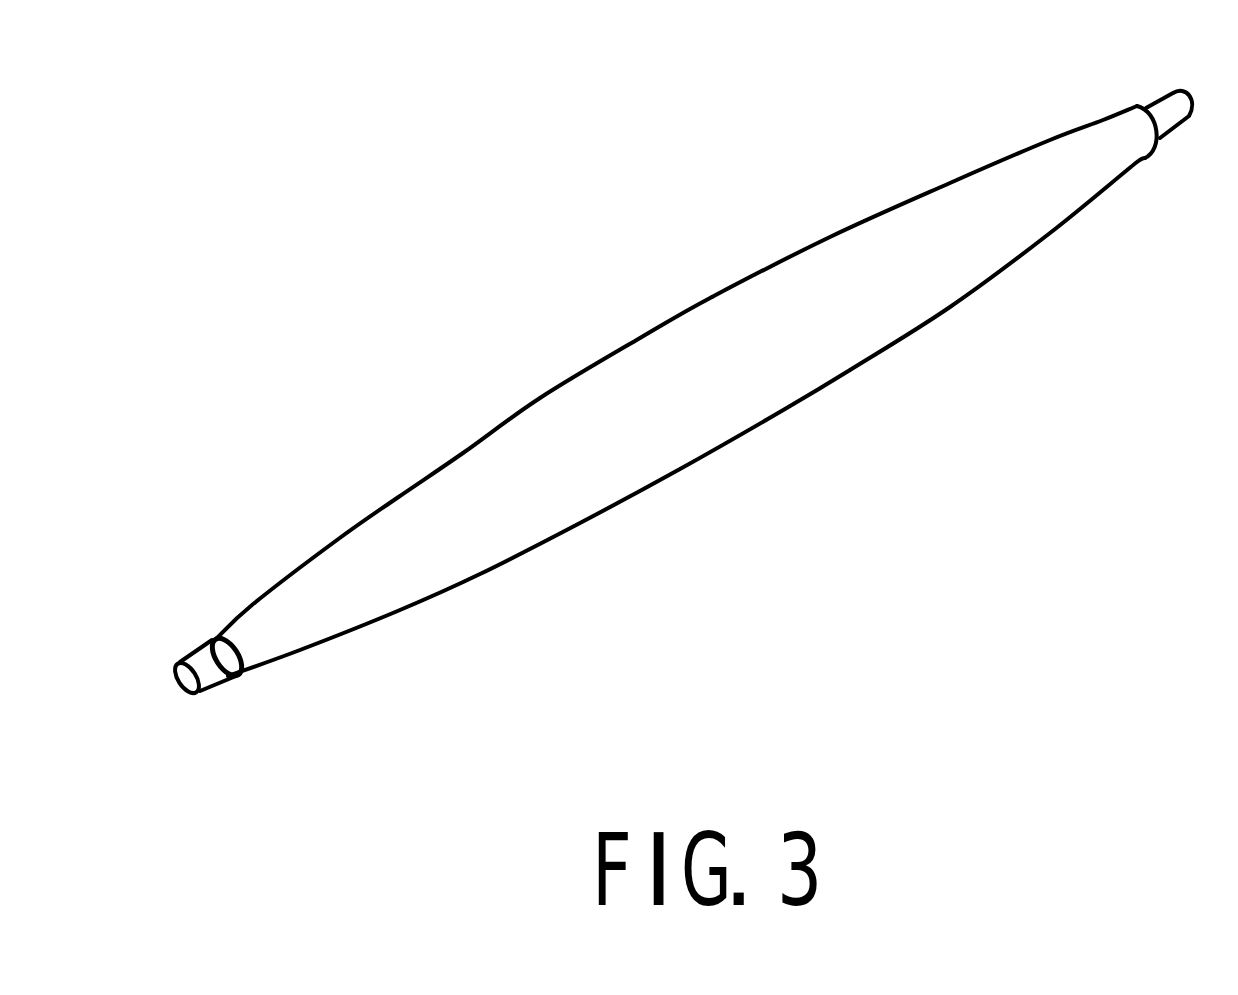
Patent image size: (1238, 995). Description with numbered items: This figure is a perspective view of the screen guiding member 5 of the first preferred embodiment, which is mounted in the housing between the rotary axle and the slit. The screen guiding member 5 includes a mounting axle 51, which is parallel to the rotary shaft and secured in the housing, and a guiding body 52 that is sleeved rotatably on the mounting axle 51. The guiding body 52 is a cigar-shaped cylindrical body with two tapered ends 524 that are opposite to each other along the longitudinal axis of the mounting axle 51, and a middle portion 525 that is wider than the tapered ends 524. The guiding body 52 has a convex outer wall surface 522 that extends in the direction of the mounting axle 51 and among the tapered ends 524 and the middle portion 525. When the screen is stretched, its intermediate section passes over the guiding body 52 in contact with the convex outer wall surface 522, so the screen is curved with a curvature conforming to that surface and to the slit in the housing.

The screen guiding member 5 is at (691, 443).
The mounting axle 51 is at (207, 672).
The guiding body 52 is at (709, 391).
The convex outer wall surface 522 is at (775, 263).
The tapered ends 524 is at (257, 640).
The middle portion 525 is at (712, 297).